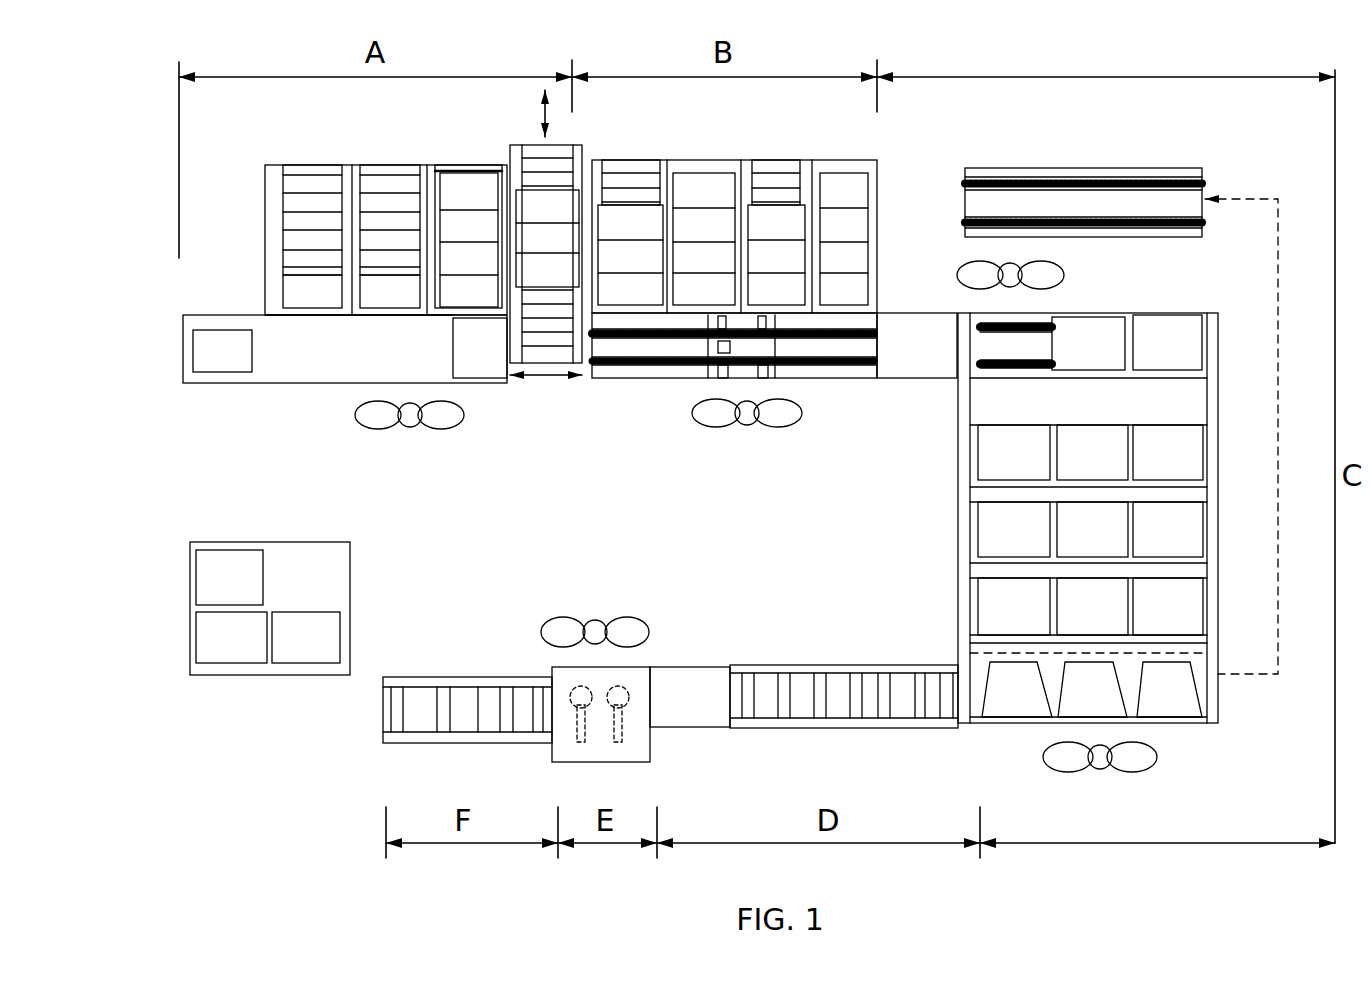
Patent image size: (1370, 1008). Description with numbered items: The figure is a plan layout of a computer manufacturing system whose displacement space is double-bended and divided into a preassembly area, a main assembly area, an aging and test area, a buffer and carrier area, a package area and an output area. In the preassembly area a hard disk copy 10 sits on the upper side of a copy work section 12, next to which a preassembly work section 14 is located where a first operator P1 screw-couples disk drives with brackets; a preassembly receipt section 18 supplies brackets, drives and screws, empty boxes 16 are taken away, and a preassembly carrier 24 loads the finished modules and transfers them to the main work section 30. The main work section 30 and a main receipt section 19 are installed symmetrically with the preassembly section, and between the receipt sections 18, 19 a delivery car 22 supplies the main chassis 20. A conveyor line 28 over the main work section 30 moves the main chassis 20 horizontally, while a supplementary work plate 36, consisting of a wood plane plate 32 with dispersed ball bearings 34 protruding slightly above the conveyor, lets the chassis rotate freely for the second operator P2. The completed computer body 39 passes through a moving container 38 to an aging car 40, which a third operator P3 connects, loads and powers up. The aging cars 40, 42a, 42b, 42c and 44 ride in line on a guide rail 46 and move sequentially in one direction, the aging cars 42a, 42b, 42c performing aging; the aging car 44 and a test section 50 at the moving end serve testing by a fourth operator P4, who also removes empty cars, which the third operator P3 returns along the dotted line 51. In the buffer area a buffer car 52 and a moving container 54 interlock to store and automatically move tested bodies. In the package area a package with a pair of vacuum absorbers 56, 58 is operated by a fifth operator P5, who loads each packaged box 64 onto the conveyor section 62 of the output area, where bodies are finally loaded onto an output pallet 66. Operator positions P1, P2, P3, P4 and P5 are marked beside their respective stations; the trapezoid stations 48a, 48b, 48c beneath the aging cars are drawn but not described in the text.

The hard disk copy 10 is at (218, 372).
The copy work section 12 is at (258, 383).
The preassembly work section 14 is at (325, 383).
The empty boxes 16 is at (298, 293).
The preassembly receipt section 18 is at (318, 178).
The main receipt section 19 is at (676, 158).
The main chassis 20 is at (572, 197).
The delivery car 22 is at (522, 146).
The preassembly carrier 24 is at (487, 378).
The conveyor line 28 is at (585, 370).
The main work section 30 is at (628, 382).
The plane plate 32 is at (722, 378).
The ball bearings 34 is at (718, 373).
The supplementary work plate 36 is at (625, 487).
The moving container 38 is at (917, 370).
The computer body 39 is at (1105, 330).
The aging car 40 is at (1172, 320).
The aging car 42a is at (1195, 425).
The aging car 42b is at (1195, 500).
The aging car 42c is at (1195, 575).
The aging car 44 is at (1208, 640).
The guide rail 46 is at (1212, 362).
The hopper 48a is at (995, 700).
The hopper 48b is at (1070, 700).
The hopper 48c is at (1177, 700).
The test section 50 is at (1200, 723).
The dotted line 51 is at (1252, 197).
The buffer car 52 is at (835, 728).
The moving container 54 is at (715, 688).
The vacuum absorber 56 is at (575, 692).
The vacuum absorber 58 is at (622, 695).
The conveyor section 62 is at (443, 677).
The packaged box 64 is at (330, 630).
The output pallet 66 is at (310, 562).
The first operator P1 is at (410, 418).
The second operator P2 is at (747, 415).
The third operator P3 is at (1010, 270).
The fourth operator P4 is at (1100, 760).
The fifth operator P5 is at (595, 632).